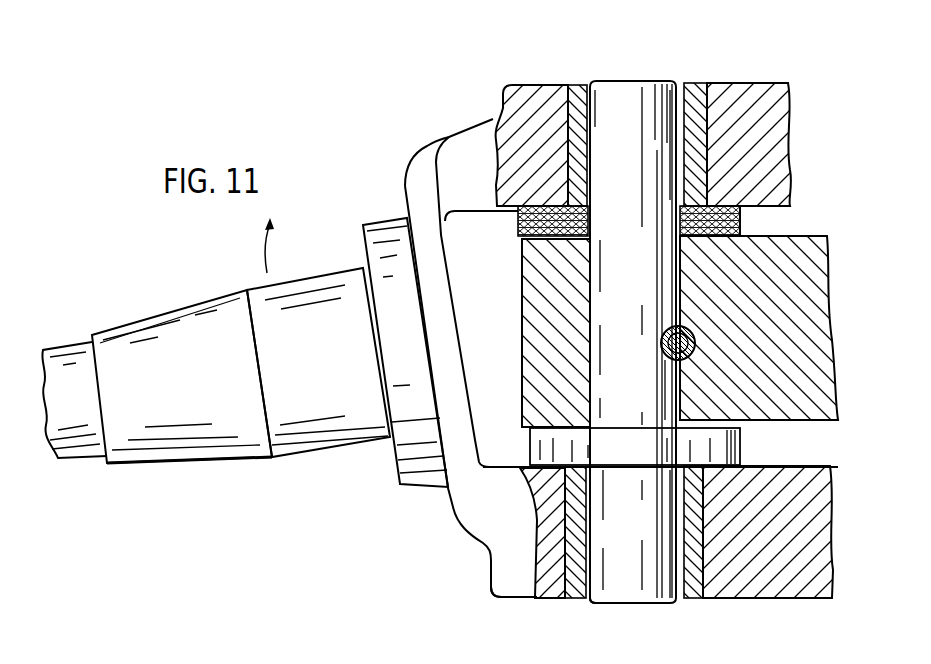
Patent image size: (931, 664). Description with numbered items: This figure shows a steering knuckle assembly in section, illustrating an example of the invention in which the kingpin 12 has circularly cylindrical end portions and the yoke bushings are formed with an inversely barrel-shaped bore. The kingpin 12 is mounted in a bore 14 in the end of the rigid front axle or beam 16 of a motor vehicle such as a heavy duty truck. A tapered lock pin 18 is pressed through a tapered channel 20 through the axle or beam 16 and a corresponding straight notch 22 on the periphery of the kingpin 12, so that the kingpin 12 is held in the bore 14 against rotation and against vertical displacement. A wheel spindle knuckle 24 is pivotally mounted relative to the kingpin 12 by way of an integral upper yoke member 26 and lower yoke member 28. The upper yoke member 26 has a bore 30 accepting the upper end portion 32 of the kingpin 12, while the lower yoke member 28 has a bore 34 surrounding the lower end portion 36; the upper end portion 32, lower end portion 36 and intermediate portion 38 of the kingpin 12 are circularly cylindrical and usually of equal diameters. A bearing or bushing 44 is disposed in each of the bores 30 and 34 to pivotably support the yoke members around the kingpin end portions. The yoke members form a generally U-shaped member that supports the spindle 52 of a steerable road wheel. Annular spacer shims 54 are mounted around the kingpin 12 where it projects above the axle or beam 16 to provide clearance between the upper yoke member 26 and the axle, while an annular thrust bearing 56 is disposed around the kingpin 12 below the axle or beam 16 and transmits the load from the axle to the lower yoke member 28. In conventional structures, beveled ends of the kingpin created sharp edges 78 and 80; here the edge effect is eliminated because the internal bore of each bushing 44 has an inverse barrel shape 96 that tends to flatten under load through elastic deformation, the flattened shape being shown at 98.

The kingpin 12 is at (589, 352).
The bore 14 is at (600, 390).
The front axle or beam 16 is at (806, 293).
The tapered lock pin 18 is at (665, 372).
The tapered channel 20 is at (696, 347).
The straight notch 22 is at (661, 348).
The wheel spindle knuckle 24 is at (449, 139).
The upper yoke member 26 is at (505, 110).
The lower yoke member 28 is at (523, 592).
The bore 30 is at (568, 160).
The upper end portion 32 is at (617, 97).
The bore 34 is at (572, 520).
The lower end portion 36 is at (655, 603).
The intermediate portion 38 is at (602, 312).
The bearing or bushing 44 is at (708, 148).
The spindle 52 is at (258, 456).
The annular spacer shims 54 is at (742, 217).
The annular thrust bearing 56 is at (741, 443).
The sharp edge 78 is at (655, 80).
The sharp edge 80 is at (605, 605).
The inverse barrel shape 96 is at (676, 143).
The flattened bore shape 98 is at (590, 155).